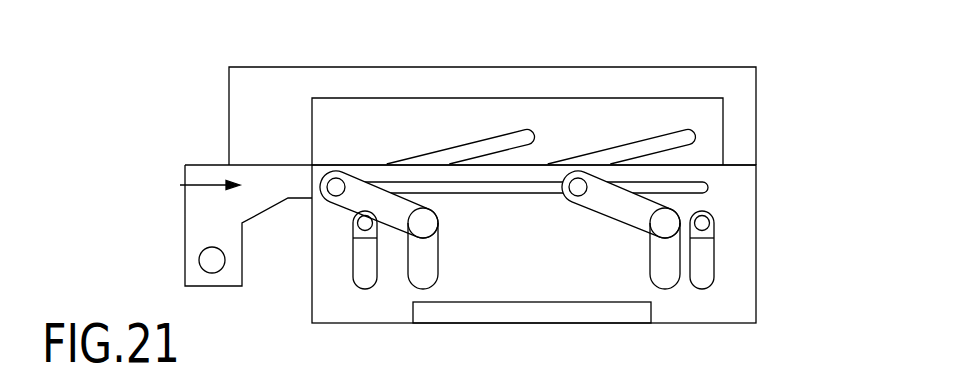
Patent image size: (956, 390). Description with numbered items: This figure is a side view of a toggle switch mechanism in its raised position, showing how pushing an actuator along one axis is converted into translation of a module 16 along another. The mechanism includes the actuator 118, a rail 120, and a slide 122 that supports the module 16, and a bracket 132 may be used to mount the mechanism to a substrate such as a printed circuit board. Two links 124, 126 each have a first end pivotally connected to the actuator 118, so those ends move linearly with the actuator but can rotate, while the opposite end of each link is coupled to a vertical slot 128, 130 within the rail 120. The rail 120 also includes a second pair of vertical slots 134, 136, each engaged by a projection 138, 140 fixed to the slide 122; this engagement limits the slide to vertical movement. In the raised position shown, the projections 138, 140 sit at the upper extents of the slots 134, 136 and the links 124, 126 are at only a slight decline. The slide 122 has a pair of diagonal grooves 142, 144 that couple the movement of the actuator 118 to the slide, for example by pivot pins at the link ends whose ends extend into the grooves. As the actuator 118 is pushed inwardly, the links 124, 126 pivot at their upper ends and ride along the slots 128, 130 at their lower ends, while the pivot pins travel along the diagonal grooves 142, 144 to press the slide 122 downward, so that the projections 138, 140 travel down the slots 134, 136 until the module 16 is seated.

The module 16 is at (238, 111).
The actuator 118 is at (191, 236).
The rail 120 is at (732, 196).
The slide 122 is at (705, 152).
The link 124 is at (438, 222).
The link 126 is at (630, 220).
The vertical slot 128 is at (438, 268).
The vertical slot 130 is at (650, 267).
The bracket 132 is at (573, 316).
The vertical slot 134 is at (353, 268).
The vertical slot 136 is at (700, 272).
The projection 138 is at (355, 225).
The projection 140 is at (703, 225).
The diagonal groove 142 is at (510, 138).
The diagonal groove 144 is at (669, 138).